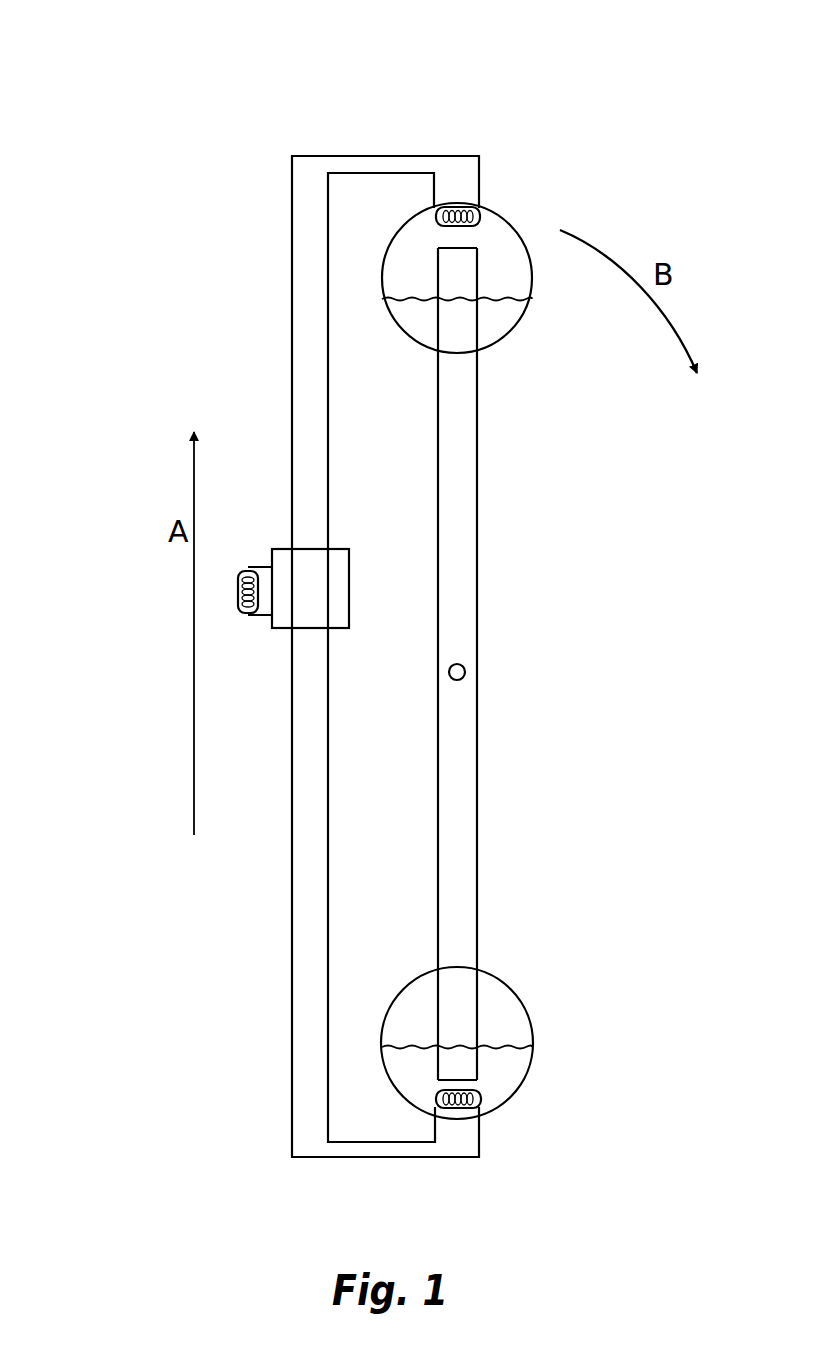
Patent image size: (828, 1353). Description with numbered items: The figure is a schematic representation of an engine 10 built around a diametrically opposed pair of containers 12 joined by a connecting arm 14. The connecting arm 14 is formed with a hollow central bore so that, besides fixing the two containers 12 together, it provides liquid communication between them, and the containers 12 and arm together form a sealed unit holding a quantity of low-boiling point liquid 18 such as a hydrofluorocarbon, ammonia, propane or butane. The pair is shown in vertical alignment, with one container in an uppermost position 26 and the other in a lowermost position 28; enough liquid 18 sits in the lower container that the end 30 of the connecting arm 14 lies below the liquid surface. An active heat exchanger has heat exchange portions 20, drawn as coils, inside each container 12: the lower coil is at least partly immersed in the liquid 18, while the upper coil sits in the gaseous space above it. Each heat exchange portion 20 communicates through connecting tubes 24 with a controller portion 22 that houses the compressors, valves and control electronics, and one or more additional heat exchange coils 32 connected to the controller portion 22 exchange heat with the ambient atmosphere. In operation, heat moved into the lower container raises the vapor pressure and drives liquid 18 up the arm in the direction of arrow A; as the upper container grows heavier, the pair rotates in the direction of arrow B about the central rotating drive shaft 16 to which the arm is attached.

The engine 10 is at (107, 140).
The containers 12 is at (520, 230).
The connecting arm 14 is at (477, 553).
The rotating drive shaft 16 is at (466, 678).
The low-boiling point liquid 18 is at (515, 1075).
The heat exchange portions 20 is at (488, 212).
The controller portion 22 is at (349, 600).
The connecting tubes 24 is at (292, 312).
The uppermost position 26 is at (533, 273).
The lowermost position 28 is at (537, 1058).
The end of the connecting arm 30 is at (437, 1083).
The additional heat exchange coils 32 is at (239, 591).